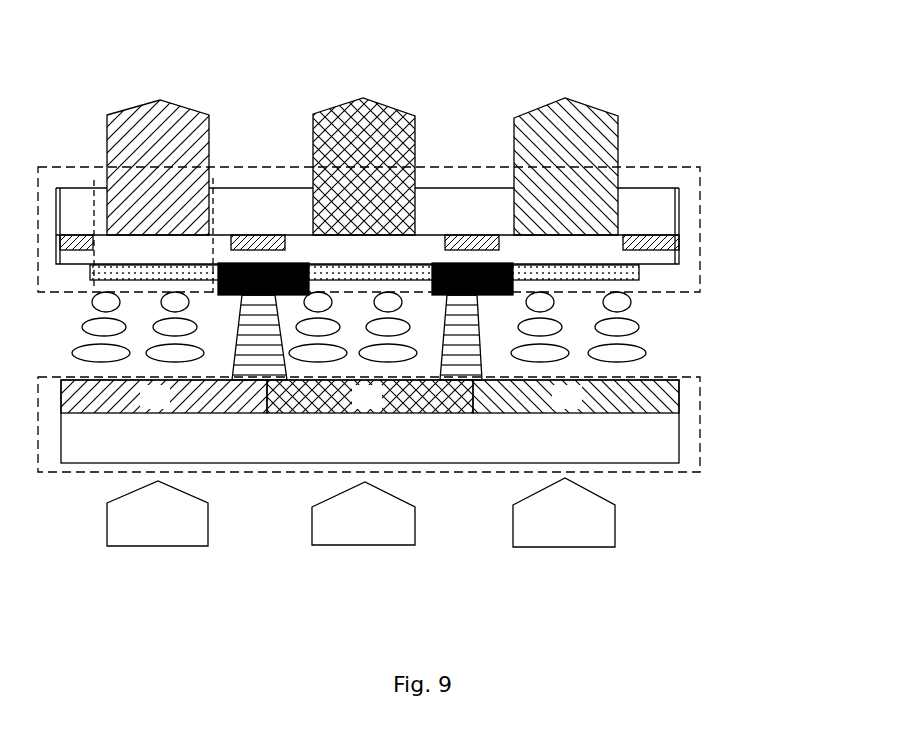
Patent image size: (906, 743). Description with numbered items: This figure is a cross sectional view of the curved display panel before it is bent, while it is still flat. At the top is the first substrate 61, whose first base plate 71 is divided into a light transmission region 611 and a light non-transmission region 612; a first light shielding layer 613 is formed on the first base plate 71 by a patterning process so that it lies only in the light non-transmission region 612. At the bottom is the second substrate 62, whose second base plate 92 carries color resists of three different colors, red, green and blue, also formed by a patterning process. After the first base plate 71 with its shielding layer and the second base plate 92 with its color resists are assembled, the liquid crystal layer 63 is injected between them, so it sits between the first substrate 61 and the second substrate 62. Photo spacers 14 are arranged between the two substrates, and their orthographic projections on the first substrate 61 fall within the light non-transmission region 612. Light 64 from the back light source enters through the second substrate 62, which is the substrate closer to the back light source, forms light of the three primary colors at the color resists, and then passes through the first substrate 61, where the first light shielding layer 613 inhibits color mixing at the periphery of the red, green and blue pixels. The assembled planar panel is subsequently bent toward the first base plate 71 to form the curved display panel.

The first substrate 61 is at (700, 216).
The first base plate 71 is at (655, 188).
The light transmission region 611 is at (153, 180).
The light non-transmission region 612 is at (267, 178).
The first light shielding layer 613 is at (458, 262).
The liquid crystal layer 63 is at (678, 333).
The photo spacers 14 is at (253, 353).
The second substrate 62 is at (702, 418).
The second base plate 92 is at (653, 463).
The light 64 is at (572, 530).